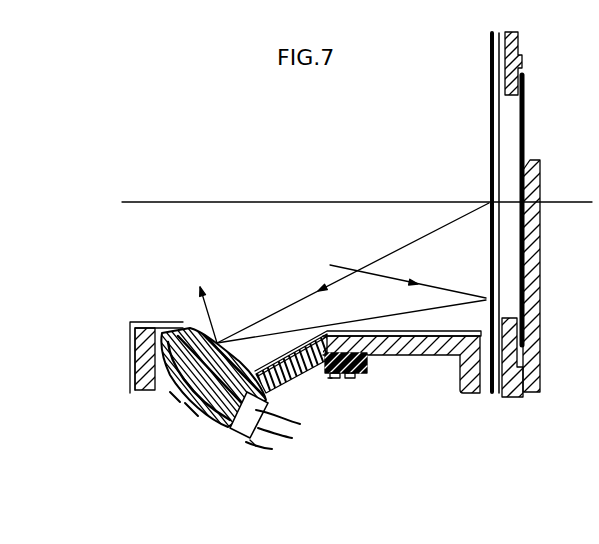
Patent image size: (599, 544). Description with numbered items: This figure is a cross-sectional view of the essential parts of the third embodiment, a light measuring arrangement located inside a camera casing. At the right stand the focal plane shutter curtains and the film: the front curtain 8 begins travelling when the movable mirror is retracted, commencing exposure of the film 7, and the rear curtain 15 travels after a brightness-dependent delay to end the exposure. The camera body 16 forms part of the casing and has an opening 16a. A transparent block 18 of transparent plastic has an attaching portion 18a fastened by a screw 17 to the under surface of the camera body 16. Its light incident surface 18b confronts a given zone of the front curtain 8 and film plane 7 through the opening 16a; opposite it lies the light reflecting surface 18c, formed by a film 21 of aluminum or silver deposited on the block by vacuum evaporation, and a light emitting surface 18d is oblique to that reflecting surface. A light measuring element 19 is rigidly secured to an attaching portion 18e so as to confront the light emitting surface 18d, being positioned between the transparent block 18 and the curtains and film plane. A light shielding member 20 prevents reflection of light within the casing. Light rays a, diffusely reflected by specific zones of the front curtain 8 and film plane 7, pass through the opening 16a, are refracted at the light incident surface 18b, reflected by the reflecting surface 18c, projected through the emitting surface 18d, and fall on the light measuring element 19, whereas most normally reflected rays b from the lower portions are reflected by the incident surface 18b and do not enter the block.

The film 7 is at (541, 220).
The front curtain 8 is at (478, 143).
The rear curtain 15 is at (503, 121).
The camera body 16 is at (133, 383).
The opening 16a is at (262, 345).
The screw 17 is at (350, 376).
The transparent block 18 is at (208, 425).
The attaching portion 18a is at (328, 378).
The light incident surface 18b is at (193, 328).
The light reflecting surface 18c is at (190, 407).
The light emitting surface 18d is at (222, 440).
The attaching portion 18e is at (262, 440).
The light measuring element 19 is at (252, 448).
The light shielding member 20 is at (131, 343).
The film of aluminum or silver 21 is at (173, 398).
The light rays a is at (446, 227).
The normally reflected light rays b is at (472, 297).